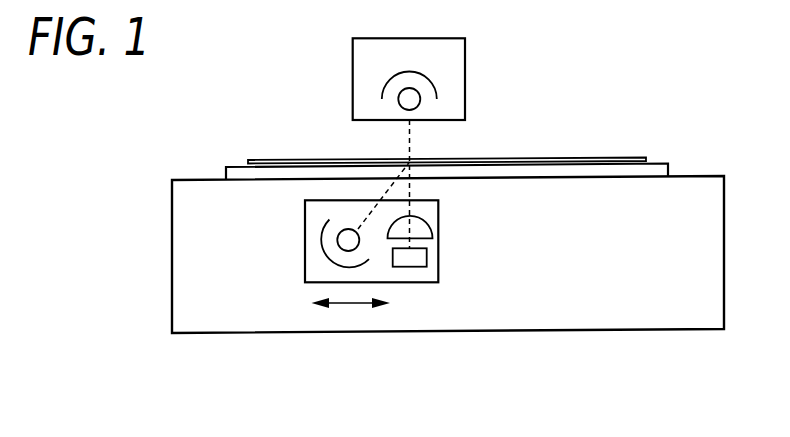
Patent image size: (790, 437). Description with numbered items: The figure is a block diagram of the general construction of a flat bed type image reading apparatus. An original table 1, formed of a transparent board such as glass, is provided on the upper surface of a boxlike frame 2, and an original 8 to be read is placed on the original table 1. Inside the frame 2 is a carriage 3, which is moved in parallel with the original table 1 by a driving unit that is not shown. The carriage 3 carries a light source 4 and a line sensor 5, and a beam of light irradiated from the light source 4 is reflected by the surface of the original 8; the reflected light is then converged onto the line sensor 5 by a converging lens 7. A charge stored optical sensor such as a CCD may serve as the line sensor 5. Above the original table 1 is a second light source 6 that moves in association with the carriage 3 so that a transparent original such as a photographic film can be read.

The original table 1 is at (652, 160).
The frame 2 is at (578, 330).
The carriage 3 is at (305, 257).
The light source 4 is at (335, 231).
The line sensor 5 is at (427, 255).
The second light source 6 is at (398, 105).
The converging lens 7 is at (427, 220).
The original 8 is at (498, 157).